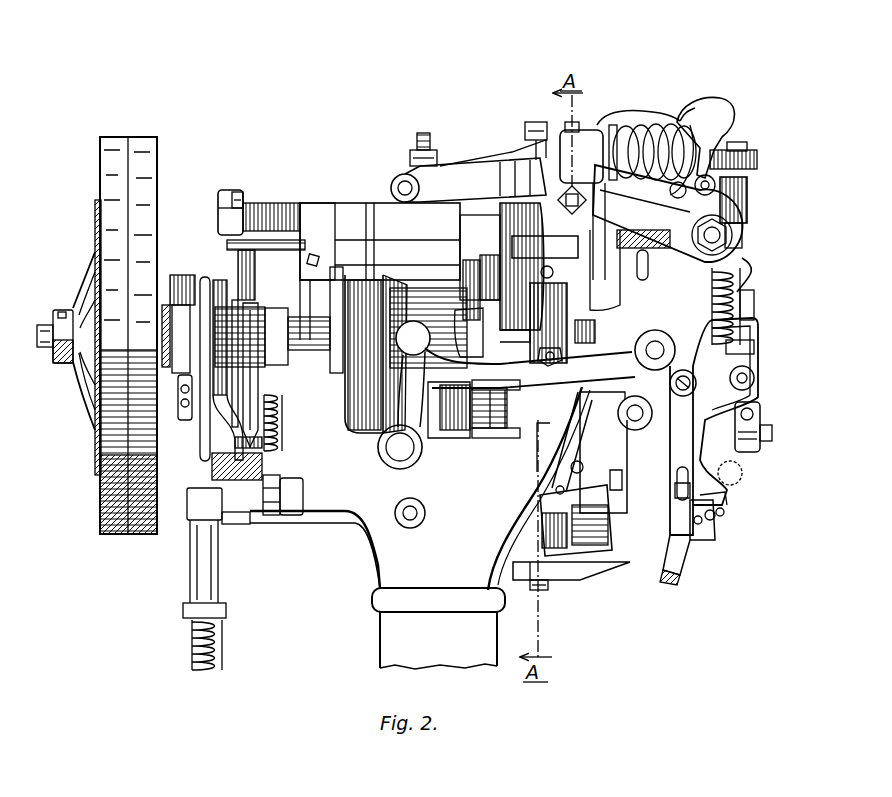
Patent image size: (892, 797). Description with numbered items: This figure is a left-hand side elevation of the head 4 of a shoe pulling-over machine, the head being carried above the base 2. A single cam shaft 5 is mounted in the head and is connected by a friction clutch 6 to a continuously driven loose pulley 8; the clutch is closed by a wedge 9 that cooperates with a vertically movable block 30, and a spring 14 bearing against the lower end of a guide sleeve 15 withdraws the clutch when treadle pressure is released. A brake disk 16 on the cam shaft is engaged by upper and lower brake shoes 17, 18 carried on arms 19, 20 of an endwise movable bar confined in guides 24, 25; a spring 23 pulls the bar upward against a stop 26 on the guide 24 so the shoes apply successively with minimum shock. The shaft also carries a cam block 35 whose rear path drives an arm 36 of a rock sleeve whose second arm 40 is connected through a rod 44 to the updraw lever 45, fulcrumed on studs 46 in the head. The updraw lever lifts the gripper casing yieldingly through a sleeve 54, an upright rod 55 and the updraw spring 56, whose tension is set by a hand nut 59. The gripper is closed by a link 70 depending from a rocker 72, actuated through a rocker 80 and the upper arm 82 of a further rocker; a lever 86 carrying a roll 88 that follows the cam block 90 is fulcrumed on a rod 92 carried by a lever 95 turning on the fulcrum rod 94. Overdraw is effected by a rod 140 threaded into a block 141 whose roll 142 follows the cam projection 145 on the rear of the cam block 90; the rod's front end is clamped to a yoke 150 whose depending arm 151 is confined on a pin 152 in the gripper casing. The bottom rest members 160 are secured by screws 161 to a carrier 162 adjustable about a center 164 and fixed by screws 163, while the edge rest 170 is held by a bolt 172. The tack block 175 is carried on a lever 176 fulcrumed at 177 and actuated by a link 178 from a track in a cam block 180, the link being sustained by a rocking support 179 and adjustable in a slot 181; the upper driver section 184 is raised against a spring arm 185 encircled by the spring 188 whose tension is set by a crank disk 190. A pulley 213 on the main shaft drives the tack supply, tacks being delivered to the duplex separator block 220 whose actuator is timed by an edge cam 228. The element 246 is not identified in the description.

The base 2 is at (380, 645).
The head 4 is at (368, 538).
The cam shaft 5 is at (57, 352).
The friction clutch 6 is at (95, 405).
The loose pulley 8 is at (100, 485).
The wedge 9 is at (182, 350).
The spring 14 is at (192, 655).
The guide sleeve 15 is at (190, 575).
The brake disk 16 is at (232, 255).
The upper brake shoe 17 is at (220, 282).
The lower brake shoe 18 is at (245, 452).
The upper arm 19 is at (238, 255).
The lower arm 20 is at (205, 412).
The spring 23 is at (277, 437).
The guide 24 is at (225, 190).
The guide 25 is at (240, 524).
The stop 26 is at (238, 192).
The block 30 is at (165, 365).
The cam block 35 is at (352, 383).
The arm 36 is at (335, 292).
The second arm 40 is at (410, 248).
The rod 44 is at (418, 132).
The updraw lever 45 is at (432, 165).
The studs 46 is at (700, 214).
The sleeve 54 is at (712, 205).
The upright rod 55 is at (727, 313).
The updraw spring 56 is at (730, 327).
The hand nut 59 is at (758, 157).
The link 70 is at (733, 333).
The rocker 72 is at (748, 200).
The rocker 80 is at (533, 122).
The upper arm 82 is at (540, 195).
The lever 86 is at (520, 255).
The roll 88 is at (475, 300).
The cam block 90 is at (490, 263).
The rod 92 is at (580, 273).
The fulcrum rod 94 is at (598, 347).
The lever 95 is at (585, 320).
The overdraw rod 140 is at (490, 438).
The block 141 is at (424, 440).
The roll 142 is at (445, 412).
The projection 145 is at (535, 354).
The yoke 150 is at (740, 442).
The depending arm 151 is at (712, 498).
The pin 152 is at (742, 476).
The bottom rest members 160 is at (675, 578).
The screws 161 is at (714, 507).
The carrier 162 is at (750, 348).
The screws 163 is at (692, 386).
The center 164 is at (755, 378).
The edge rest 170 is at (612, 568).
The bolt 172 is at (540, 590).
The tack block 175 is at (588, 556).
The lever 176 is at (620, 447).
The fulcrum 177 is at (627, 413).
The link 178 is at (555, 447).
The rocking support 179 is at (428, 513).
The cam block 180 is at (364, 427).
The slot 181 is at (740, 275).
The upper section 184 is at (648, 125).
The spring arm 185 is at (612, 128).
The spring 188 is at (670, 118).
The crank disk 190 is at (716, 112).
The pulley 213 is at (300, 245).
The duplex separator block 220 is at (607, 523).
The edge cam 228 is at (370, 280).
The lever 246 is at (662, 450).